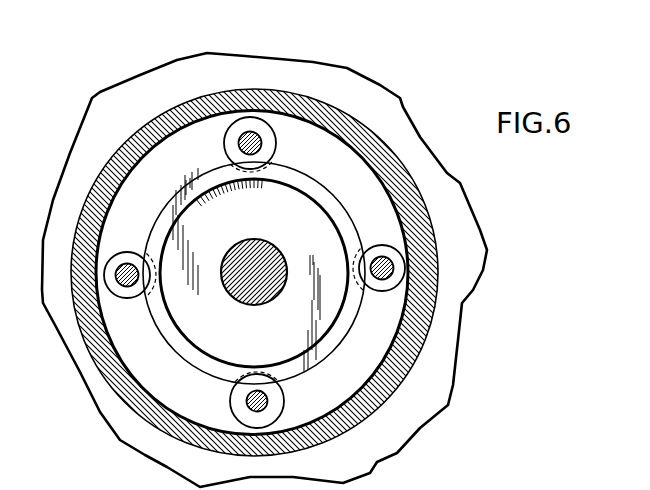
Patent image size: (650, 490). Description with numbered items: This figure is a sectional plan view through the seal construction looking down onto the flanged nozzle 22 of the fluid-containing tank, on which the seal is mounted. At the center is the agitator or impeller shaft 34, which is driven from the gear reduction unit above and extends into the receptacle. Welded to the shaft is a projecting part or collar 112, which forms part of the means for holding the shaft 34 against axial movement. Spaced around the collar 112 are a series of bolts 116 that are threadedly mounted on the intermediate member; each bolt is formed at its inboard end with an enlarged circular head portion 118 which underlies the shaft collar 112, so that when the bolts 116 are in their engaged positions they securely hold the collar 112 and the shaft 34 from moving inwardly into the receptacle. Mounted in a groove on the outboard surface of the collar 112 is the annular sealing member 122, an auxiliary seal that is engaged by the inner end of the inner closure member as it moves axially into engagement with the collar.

The flanged nozzle 22 is at (425, 284).
The agitator or impeller shaft 34 is at (288, 243).
The shaft collar 112 is at (259, 346).
The bolts 116 is at (238, 143).
The enlarged circular head portions 118 is at (275, 153).
The annular sealing member 122 is at (183, 207).